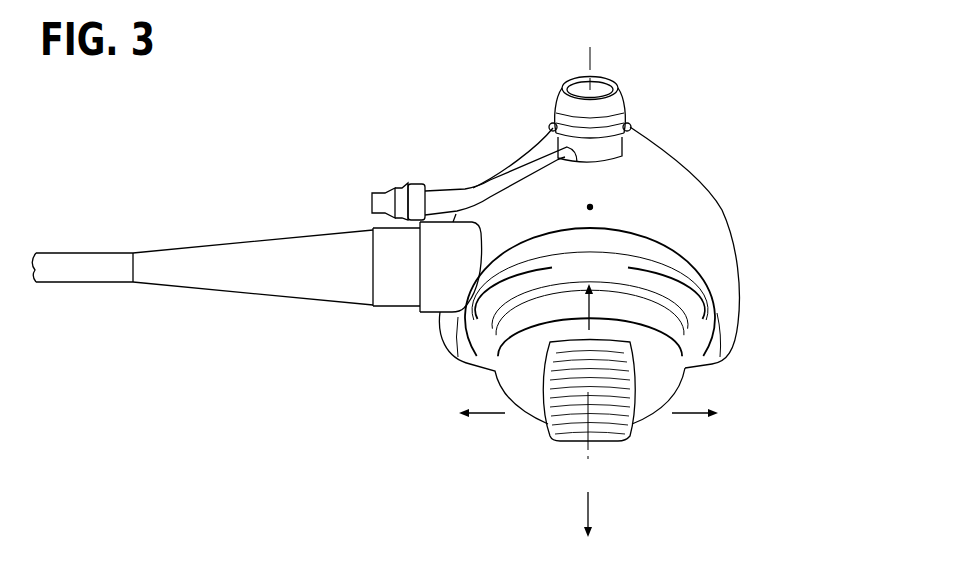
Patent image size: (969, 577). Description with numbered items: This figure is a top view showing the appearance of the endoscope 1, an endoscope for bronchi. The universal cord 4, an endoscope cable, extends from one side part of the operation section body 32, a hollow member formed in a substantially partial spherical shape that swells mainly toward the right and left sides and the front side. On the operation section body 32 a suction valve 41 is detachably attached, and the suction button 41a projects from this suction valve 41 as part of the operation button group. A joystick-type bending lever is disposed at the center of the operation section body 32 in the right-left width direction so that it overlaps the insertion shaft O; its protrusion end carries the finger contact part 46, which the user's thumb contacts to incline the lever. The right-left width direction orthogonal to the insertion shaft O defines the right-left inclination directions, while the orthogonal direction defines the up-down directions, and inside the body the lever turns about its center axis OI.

The endoscope 1 is at (710, 59).
The universal cord 4 is at (85, 304).
The operation section body 32 is at (710, 144).
The suction valve 41 is at (549, 118).
The suction button 41a is at (599, 84).
The finger contact part 46 is at (544, 427).
The insertion shaft O is at (592, 206).
The center axis of the bending lever OI is at (590, 446).